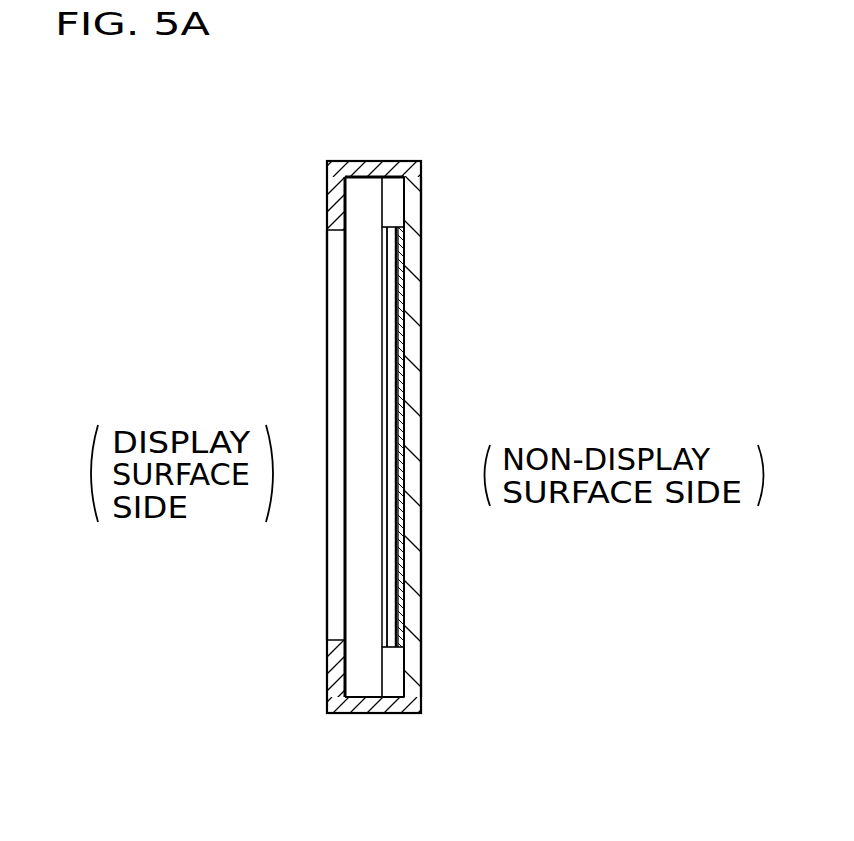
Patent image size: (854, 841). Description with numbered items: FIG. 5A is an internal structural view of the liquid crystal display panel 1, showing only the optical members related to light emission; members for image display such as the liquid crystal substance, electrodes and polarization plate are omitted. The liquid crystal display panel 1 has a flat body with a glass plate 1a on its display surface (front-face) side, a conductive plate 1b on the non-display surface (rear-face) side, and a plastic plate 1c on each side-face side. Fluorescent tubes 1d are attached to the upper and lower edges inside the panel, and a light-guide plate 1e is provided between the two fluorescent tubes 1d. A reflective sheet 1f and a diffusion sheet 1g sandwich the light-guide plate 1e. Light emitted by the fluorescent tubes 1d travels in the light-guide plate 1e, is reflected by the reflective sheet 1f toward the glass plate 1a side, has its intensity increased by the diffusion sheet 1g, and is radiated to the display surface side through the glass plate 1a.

The liquid crystal display panel 1 is at (430, 147).
The glass plate 1a is at (330, 327).
The conductive plate 1b is at (410, 410).
The plastic plate 1c is at (273, 710).
The fluorescent tube 1d is at (478, 658).
The light-guide plate 1e is at (392, 272).
The reflective sheet 1f is at (400, 303).
The diffusion sheet 1g is at (385, 338).